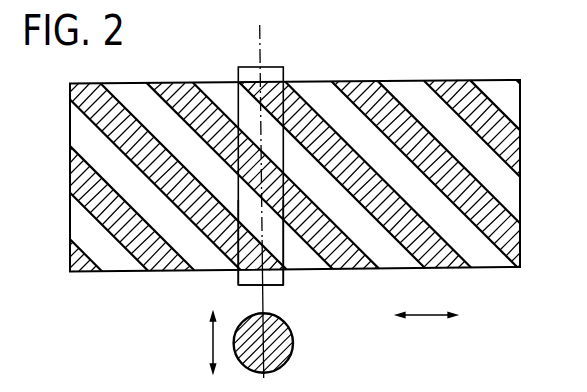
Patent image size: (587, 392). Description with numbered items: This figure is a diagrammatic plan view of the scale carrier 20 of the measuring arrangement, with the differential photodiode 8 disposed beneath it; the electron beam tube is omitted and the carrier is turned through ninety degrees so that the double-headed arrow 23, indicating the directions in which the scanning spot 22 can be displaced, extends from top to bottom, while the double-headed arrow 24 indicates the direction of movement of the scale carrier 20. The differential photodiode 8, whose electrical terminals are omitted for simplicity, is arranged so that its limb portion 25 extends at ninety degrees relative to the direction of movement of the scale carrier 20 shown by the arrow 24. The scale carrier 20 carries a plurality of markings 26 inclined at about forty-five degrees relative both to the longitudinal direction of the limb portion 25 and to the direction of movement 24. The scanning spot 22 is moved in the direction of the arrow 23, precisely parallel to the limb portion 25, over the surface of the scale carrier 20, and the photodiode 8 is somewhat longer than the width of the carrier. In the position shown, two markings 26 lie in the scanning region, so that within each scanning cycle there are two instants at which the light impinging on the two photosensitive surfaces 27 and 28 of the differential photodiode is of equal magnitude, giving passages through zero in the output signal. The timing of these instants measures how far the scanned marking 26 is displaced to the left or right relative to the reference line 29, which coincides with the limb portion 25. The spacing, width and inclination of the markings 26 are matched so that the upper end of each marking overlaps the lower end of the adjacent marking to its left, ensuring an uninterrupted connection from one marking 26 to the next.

The differential photodiode 8 is at (273, 73).
The scale carrier 20 is at (492, 253).
The scanning spot 22 is at (293, 336).
The double-headed arrow 23 is at (212, 342).
The double-headed arrow 24 is at (425, 317).
The limb portion 25 is at (266, 277).
The markings 26 is at (137, 95).
The photosensitive surface 27 is at (249, 221).
The photosensitive surface 28 is at (279, 240).
The reference line 29 is at (264, 374).